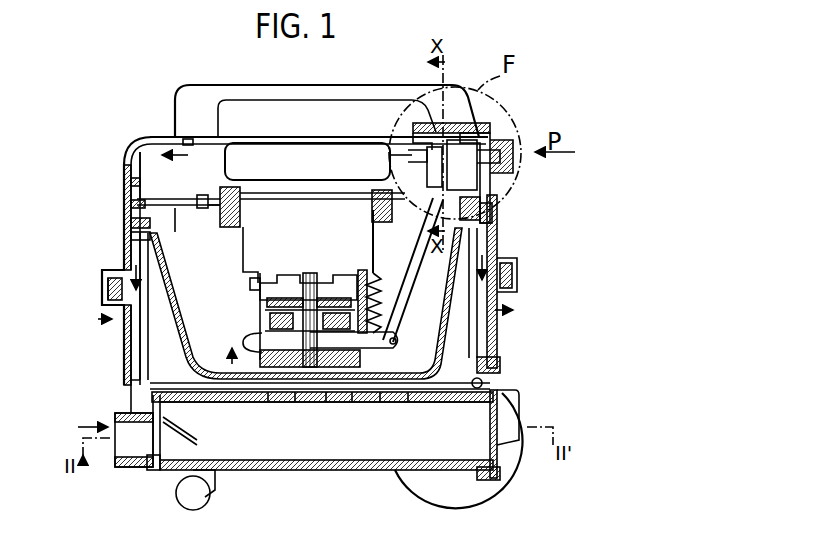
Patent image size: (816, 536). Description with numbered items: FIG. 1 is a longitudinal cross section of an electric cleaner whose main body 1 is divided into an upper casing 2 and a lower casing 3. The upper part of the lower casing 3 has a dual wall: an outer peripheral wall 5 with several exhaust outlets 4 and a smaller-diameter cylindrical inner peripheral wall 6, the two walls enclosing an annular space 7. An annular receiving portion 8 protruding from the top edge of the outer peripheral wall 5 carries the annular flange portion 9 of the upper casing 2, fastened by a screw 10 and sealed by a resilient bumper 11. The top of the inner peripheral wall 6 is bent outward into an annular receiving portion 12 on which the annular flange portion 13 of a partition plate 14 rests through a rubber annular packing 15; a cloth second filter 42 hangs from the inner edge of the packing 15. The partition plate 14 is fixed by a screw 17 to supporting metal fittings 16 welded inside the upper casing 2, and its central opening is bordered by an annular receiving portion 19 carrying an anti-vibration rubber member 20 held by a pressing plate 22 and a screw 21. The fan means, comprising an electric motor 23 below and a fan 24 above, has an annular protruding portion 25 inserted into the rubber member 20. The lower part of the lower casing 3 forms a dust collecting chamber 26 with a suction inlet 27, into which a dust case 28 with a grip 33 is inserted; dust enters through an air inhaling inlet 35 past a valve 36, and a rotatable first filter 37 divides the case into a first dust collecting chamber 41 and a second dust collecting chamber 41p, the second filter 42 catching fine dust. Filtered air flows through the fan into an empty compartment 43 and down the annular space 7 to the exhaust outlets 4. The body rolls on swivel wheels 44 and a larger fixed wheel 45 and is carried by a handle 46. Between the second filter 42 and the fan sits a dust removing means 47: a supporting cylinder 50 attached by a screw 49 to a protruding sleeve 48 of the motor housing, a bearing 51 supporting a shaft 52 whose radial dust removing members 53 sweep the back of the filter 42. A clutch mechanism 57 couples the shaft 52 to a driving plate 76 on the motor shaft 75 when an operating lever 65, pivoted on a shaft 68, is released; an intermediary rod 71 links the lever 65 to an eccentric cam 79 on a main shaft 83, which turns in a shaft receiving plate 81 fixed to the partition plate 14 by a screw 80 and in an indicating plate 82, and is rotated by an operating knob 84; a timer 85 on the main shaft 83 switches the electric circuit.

The main body 1 is at (258, 132).
The upper casing 2 is at (124, 158).
The lower casing 3 is at (124, 355).
The exhaust outlets 4 is at (124, 330).
The outer peripheral wall 5 is at (131, 381).
The inner peripheral wall 6 is at (149, 334).
The annular space 7 is at (102, 276).
The annular receiving portion 8 is at (112, 300).
The annular flange portion 9 is at (108, 288).
The screw 10 is at (517, 262).
The resilient bumper 11 is at (512, 285).
The annular receiving portion 12 is at (131, 236).
The annular flange portion 13 is at (131, 223).
The partition plate 14 is at (178, 199).
The annular packing 15 is at (131, 204).
The supporting metal fittings 16 is at (131, 182).
The screw 17 is at (158, 198).
The annular receiving portion 19 is at (232, 227).
The anti-vibration rubber member 20 is at (212, 232).
The screw 21 is at (200, 208).
The pressing plate 22 is at (246, 174).
The electric motor 23 is at (291, 193).
The fan 24 is at (305, 125).
The annular protruding portion 25 is at (240, 205).
The dust collecting chamber 26 is at (131, 403).
The suction inlet 27 is at (130, 467).
The dust case 28 is at (330, 470).
The grip 33 is at (519, 399).
The air inhaling inlet 35 is at (152, 470).
The valve 36 is at (165, 440).
The first filter 37 is at (452, 402).
The first dust collecting chamber 41 is at (252, 470).
The second dust collecting chamber 41p is at (208, 402).
The second filter 42 is at (408, 402).
The empty compartment 43 is at (176, 137).
The swivel wheels 44 is at (208, 498).
The fixed wheel 45 is at (508, 470).
The handle 46 is at (212, 88).
The dust removing means 47 is at (250, 348).
The protruding sleeve 48 is at (260, 296).
The tab 49 is at (250, 284).
The supporting cylinder 50 is at (295, 402).
The bearing 51 is at (352, 402).
The shaft for dust removing members 52 is at (326, 402).
The dust removing members 53 is at (410, 340).
The clutch mechanism 57 is at (265, 322).
The operating lever 65 is at (380, 402).
The shaft 68 is at (268, 402).
The intermediary rod 71 is at (412, 247).
The motor shaft 75 is at (310, 283).
The driving plate 76 is at (284, 277).
The eccentric cam 79 is at (430, 133).
The screw 80 is at (372, 212).
The shaft receiving plate 81 is at (390, 157).
The indicating plate 82 is at (470, 128).
The main shaft 83 is at (513, 168).
The operating knob 84 is at (490, 143).
The timer 85 is at (478, 183).